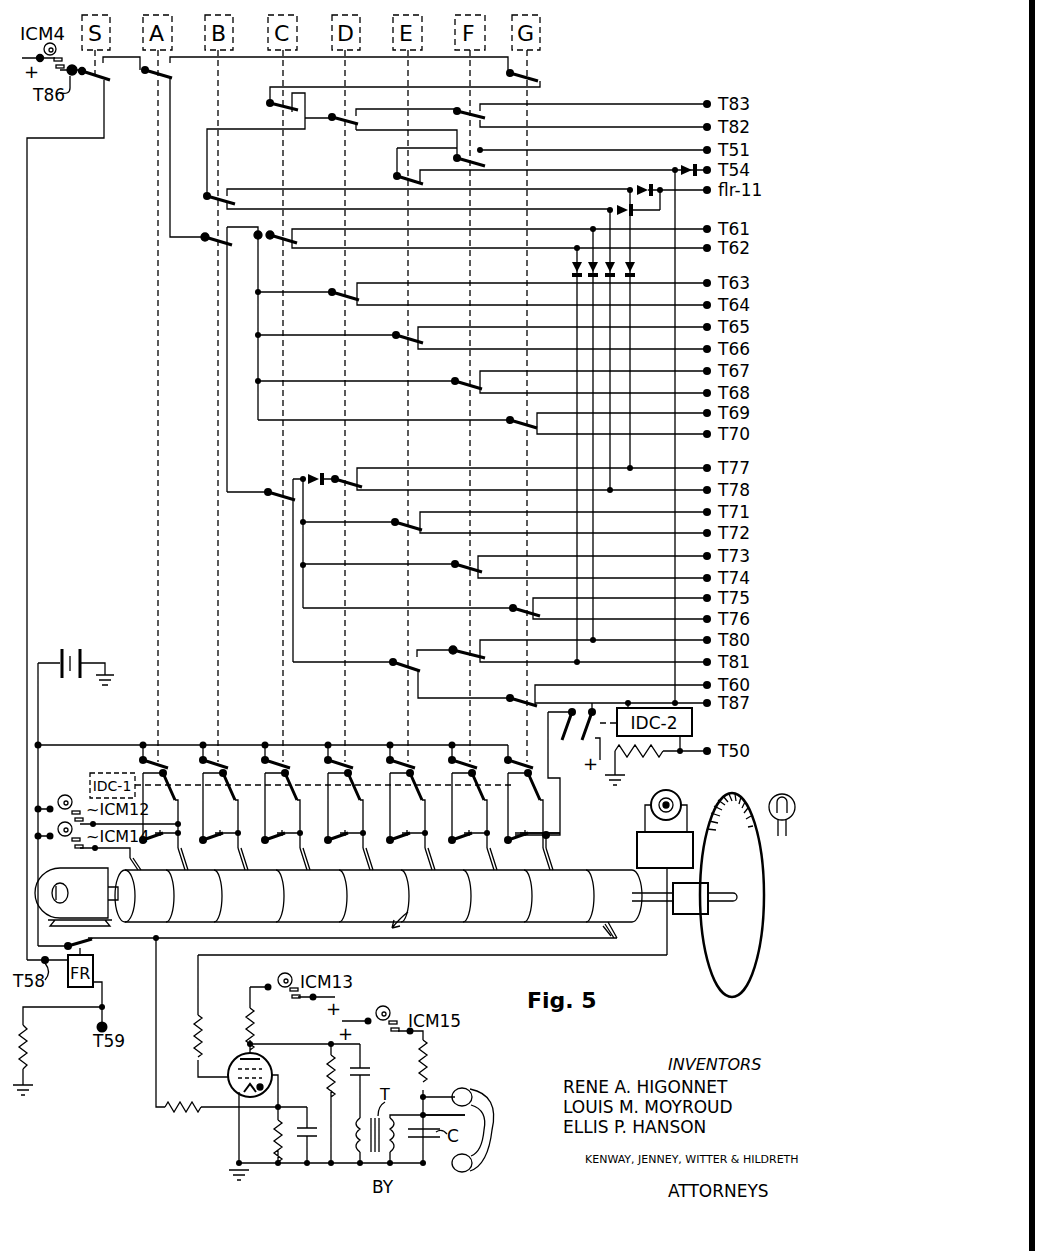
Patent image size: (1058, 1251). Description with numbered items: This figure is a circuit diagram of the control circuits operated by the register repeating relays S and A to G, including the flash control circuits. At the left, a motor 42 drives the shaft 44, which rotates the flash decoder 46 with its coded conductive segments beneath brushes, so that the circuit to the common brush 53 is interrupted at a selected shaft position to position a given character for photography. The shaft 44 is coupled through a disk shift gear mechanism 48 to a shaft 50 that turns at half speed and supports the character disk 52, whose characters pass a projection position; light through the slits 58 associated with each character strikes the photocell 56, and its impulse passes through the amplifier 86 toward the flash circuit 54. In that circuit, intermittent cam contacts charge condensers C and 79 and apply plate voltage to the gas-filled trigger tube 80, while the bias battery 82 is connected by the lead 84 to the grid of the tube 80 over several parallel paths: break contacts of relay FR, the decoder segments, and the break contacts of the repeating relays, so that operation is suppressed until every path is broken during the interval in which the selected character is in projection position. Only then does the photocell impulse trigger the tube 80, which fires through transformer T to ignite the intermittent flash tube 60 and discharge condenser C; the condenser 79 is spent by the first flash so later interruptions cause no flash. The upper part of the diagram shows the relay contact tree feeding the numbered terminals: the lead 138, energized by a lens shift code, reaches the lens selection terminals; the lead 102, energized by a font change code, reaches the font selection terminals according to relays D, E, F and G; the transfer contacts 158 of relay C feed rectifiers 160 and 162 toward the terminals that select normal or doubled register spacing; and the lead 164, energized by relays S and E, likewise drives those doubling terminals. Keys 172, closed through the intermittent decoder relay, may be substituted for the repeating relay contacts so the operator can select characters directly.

The lead 138 is at (229, 234).
The transfer contacts 158 is at (289, 234).
The rectifier 160 is at (572, 270).
The rectifier 162 is at (580, 276).
The lead 102 is at (292, 478).
The lead 164 is at (418, 650).
The bias battery 82 is at (86, 660).
The keys 172 is at (526, 825).
The motor 42 is at (76, 897).
The flash decoder 46 is at (580, 866).
The shaft 44 is at (655, 902).
The common brush 53 is at (620, 940).
The disk shift gear mechanism 48 is at (681, 914).
The shaft 50 is at (716, 890).
The character disk 52 is at (732, 895).
The slits 58 is at (742, 797).
The photocell 56 is at (678, 798).
The amplifier 86 is at (665, 880).
The lead 84 is at (156, 1084).
The gas-filled trigger tube 80 is at (270, 1063).
The condenser 79 is at (362, 1074).
The intermittent flash tube 60 is at (486, 1137).
The flash circuit 54 is at (465, 1072).